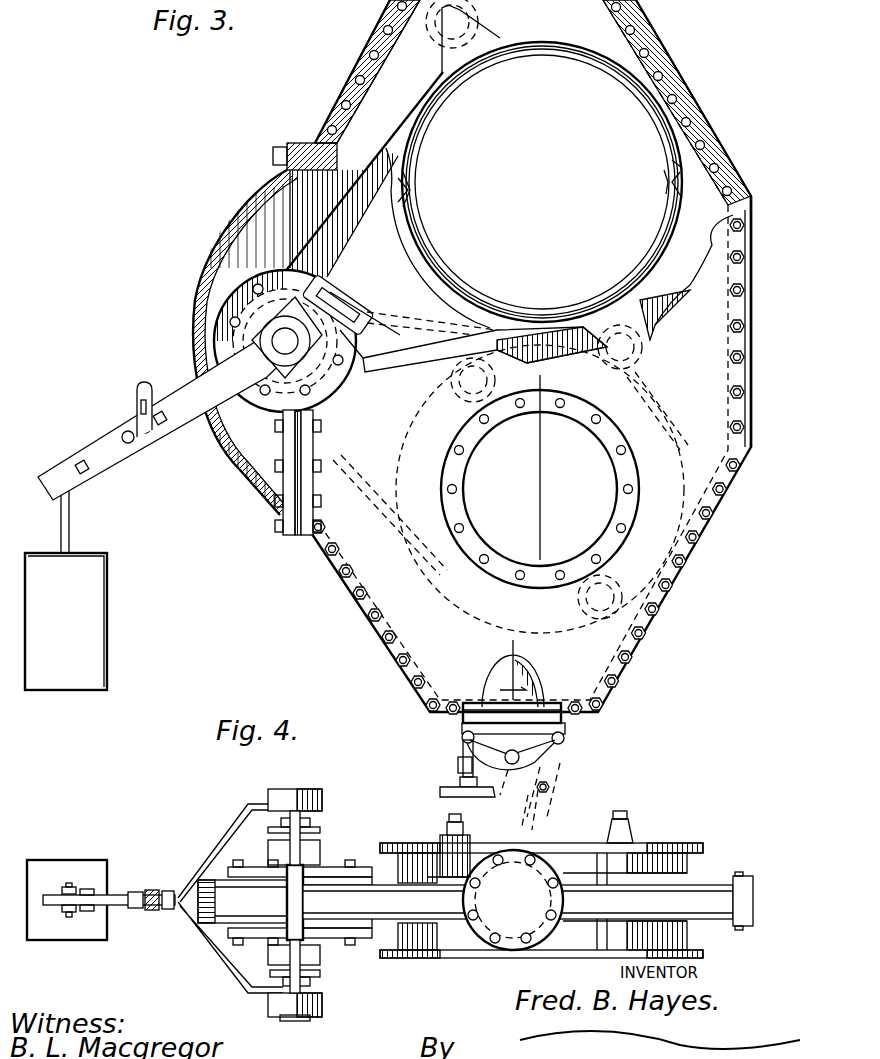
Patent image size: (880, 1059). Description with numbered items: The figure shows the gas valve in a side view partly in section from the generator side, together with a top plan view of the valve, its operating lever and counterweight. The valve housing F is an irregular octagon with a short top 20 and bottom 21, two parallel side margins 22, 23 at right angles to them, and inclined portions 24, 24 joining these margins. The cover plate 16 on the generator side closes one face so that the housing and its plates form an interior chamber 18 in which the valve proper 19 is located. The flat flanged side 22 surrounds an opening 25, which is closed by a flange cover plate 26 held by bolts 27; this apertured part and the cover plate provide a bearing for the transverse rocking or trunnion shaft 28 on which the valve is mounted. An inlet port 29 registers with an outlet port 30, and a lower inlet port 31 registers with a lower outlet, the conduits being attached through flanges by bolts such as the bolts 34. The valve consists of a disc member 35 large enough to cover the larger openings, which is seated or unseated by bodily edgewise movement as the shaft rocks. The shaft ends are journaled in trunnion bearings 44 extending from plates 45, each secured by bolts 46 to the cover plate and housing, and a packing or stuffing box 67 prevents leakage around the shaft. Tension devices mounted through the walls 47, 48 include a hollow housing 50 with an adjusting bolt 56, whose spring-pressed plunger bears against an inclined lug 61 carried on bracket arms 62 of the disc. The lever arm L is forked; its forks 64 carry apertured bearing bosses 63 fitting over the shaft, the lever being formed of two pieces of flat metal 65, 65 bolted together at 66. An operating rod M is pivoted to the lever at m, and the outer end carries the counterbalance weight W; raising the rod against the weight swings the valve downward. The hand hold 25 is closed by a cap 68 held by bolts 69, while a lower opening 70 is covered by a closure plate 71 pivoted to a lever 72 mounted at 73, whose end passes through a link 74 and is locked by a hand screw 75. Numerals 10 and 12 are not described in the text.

In FIG. 3, the bottom bracket 10 is at (513, 729).
In FIG. 3, the link rod 12 is at (537, 790).
In FIG. 4, the link rod 12 is at (535, 814).
In FIG. 3, the cover plate 16 is at (446, 603).
In FIG. 3, the interior chamber 18 is at (360, 177).
In FIG. 3, the valve proper 19 is at (412, 322).
In FIG. 4, the top 20 is at (518, 902).
In FIG. 3, the bottom 21 is at (440, 722).
In FIG. 3, the side margin 22 is at (262, 228).
In FIG. 3, the side margin 23 is at (748, 333).
In FIG. 4, the side margin 23 is at (755, 895).
In FIG. 3, the inclined portions 24 is at (330, 75).
In FIG. 4, the inclined portions 24 is at (692, 898).
In FIG. 3, the opening 25 is at (285, 155).
In FIG. 3, the flange cover plate 26 is at (213, 291).
In FIG. 4, the flange cover plate 26 is at (250, 902).
In FIG. 3, the bolts 27 is at (283, 460).
In FIG. 3, the rocking or trunnion shaft 28 is at (285, 341).
In FIG. 4, the rocking or trunnion shaft 28 is at (305, 1020).
In FIG. 3, the inlet port 29 is at (440, 258).
In FIG. 4, the outlet port 30 is at (465, 958).
In FIG. 3, the lower inlet port 31 is at (490, 462).
In FIG. 3, the bolts 34 is at (498, 538).
In FIG. 3, the disc member 35 is at (542, 182).
In FIG. 4, the trunnion bearings 44 is at (320, 846).
In FIG. 3, the plate 45 is at (235, 337).
In FIG. 3, the bolts 46 is at (228, 322).
In FIG. 4, the bolts 46 is at (352, 862).
In FIG. 4, the wall 47 is at (470, 836).
In FIG. 4, the wall 48 is at (464, 824).
In FIG. 4, the hollow housing 50 is at (450, 842).
In FIG. 4, the adjusting bolt 56 is at (191, 967).
In FIG. 3, the lug 61 is at (410, 190).
In FIG. 3, the bracket arms 62 is at (495, 35).
In FIG. 3, the apertured bearing bosses 63 is at (655, 288).
In FIG. 4, the apertured bearing bosses 63 is at (322, 802).
In FIG. 3, the forks 64 is at (169, 410).
In FIG. 4, the forks 64 is at (238, 815).
In FIG. 3, the pieces of flat metal 65 is at (88, 445).
In FIG. 4, the pieces of flat metal 65 is at (118, 893).
In FIG. 3, the bolts 66 is at (122, 434).
In FIG. 4, the bolts 66 is at (166, 892).
In FIG. 3, the packing or stuffing box 67 is at (313, 326).
In FIG. 4, the packing or stuffing box 67 is at (283, 834).
In FIG. 4, the cap 68 is at (513, 900).
In FIG. 4, the bolts 69 is at (528, 928).
In FIG. 3, the opening 70 is at (490, 690).
In FIG. 3, the closure plate 71 is at (548, 752).
In FIG. 3, the lever 72 is at (553, 815).
In FIG. 3, the pivot 73 is at (566, 738).
In FIG. 3, the link 74 is at (462, 748).
In FIG. 3, the hand screw 75 is at (458, 784).
In FIG. 3, the valve housing F is at (679, 385).
In FIG. 3, the lever arm L is at (106, 458).
In FIG. 3, the operating rod M is at (128, 398).
In FIG. 4, the operating rod M is at (152, 912).
In FIG. 3, the pivot m is at (146, 440).
In FIG. 3, the counterbalance weight W is at (66, 580).
In FIG. 4, the counterbalance weight W is at (78, 862).